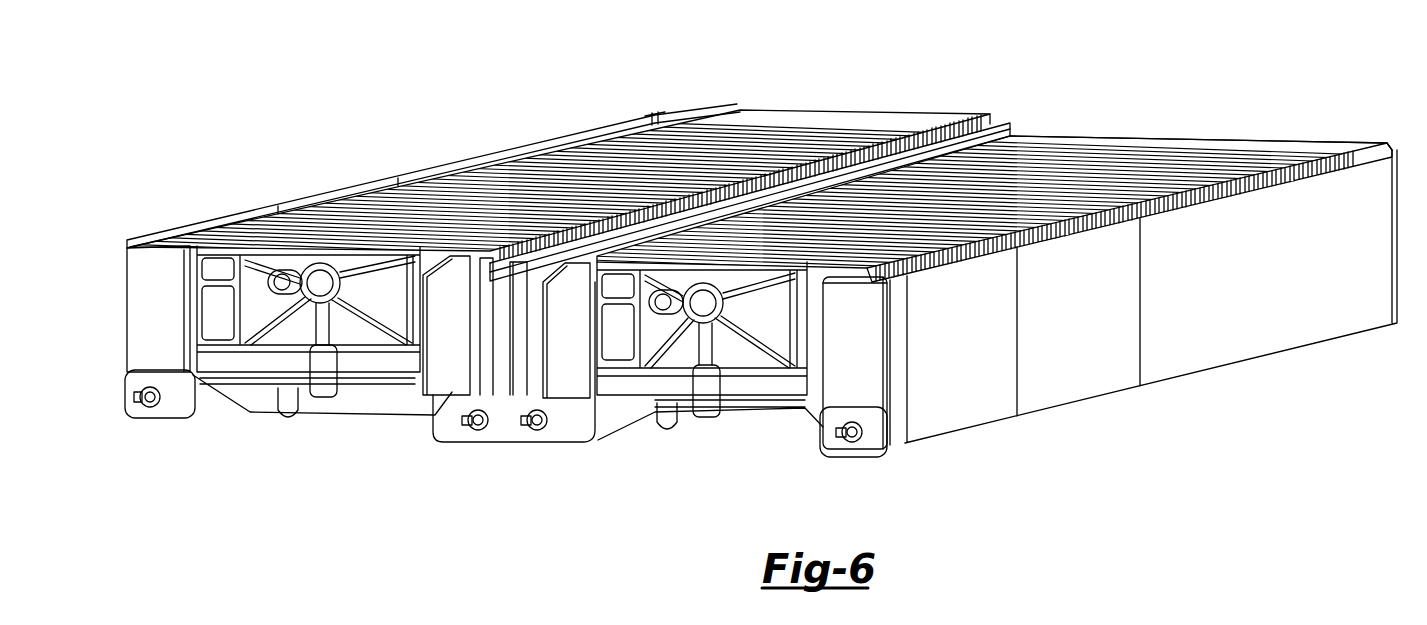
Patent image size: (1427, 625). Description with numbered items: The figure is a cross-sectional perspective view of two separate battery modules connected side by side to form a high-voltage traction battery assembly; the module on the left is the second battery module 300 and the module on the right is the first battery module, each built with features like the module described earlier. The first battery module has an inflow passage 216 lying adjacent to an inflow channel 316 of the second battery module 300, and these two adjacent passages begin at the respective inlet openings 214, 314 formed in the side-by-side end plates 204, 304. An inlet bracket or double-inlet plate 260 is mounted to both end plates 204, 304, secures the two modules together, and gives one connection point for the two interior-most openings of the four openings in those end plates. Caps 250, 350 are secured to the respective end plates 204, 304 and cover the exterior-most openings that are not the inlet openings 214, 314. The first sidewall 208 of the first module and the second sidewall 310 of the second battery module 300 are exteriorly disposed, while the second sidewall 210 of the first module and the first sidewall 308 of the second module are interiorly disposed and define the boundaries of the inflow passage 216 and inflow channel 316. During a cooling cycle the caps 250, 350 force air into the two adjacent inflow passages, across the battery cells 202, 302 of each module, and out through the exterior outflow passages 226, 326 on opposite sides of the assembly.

The battery cells 202 is at (1183, 163).
The end plate 204 is at (800, 428).
The first sidewall 208 is at (1237, 345).
The second sidewall 210 is at (1024, 142).
The inlet opening 214 is at (528, 385).
The inflow passage 216 is at (530, 349).
The exterior outflow passage 226 is at (1395, 138).
The cap 250 is at (872, 385).
The inlet bracket 260 is at (567, 430).
The second battery module 300 is at (352, 460).
The battery cells 302 is at (778, 126).
The end plate 304 is at (200, 413).
The first sidewall 308 is at (985, 138).
The second sidewall 310 is at (340, 200).
The inlet opening 314 is at (456, 382).
The inflow channel 316 is at (470, 348).
The exterior outflow passage 326 is at (618, 124).
The cap 350 is at (140, 322).